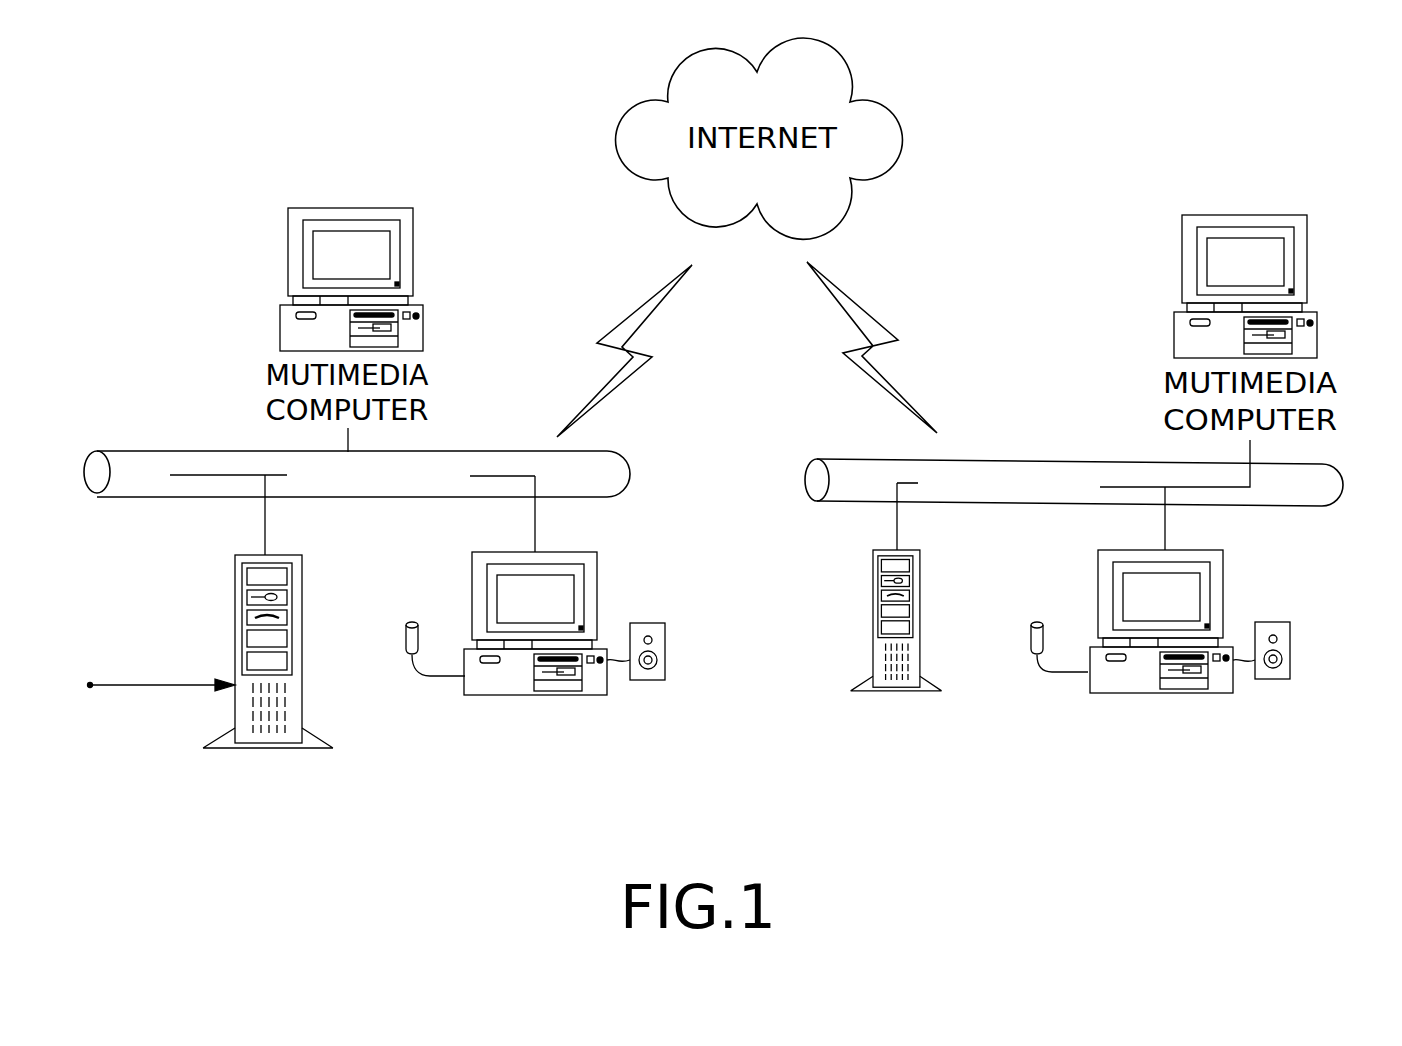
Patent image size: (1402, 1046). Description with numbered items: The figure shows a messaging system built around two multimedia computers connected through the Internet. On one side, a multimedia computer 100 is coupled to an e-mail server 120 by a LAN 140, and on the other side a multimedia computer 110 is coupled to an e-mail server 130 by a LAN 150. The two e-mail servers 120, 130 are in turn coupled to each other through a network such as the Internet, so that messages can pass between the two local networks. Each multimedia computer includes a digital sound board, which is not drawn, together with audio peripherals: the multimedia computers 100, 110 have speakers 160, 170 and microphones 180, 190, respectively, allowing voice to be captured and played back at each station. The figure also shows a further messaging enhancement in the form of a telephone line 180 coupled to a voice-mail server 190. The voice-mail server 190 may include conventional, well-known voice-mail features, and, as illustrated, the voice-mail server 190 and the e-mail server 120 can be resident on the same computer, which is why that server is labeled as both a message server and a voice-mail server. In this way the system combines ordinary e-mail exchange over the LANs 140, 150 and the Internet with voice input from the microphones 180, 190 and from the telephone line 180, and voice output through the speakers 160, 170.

The multimedia computer 100 is at (600, 567).
The multimedia computer 110 is at (1225, 574).
The e-mail server 120 is at (302, 570).
The e-mail server 130 is at (920, 575).
The LAN 140 is at (627, 472).
The LAN 150 is at (817, 455).
The speaker 160 is at (665, 636).
The speaker 170 is at (1290, 641).
The microphone / telephone line 180 is at (137, 685).
The microphone / voice-mail server 190 is at (235, 555).